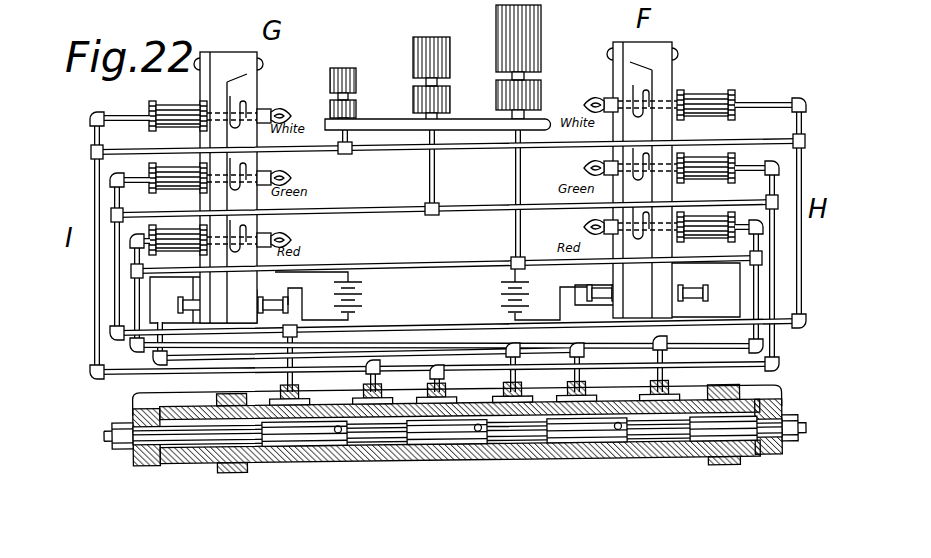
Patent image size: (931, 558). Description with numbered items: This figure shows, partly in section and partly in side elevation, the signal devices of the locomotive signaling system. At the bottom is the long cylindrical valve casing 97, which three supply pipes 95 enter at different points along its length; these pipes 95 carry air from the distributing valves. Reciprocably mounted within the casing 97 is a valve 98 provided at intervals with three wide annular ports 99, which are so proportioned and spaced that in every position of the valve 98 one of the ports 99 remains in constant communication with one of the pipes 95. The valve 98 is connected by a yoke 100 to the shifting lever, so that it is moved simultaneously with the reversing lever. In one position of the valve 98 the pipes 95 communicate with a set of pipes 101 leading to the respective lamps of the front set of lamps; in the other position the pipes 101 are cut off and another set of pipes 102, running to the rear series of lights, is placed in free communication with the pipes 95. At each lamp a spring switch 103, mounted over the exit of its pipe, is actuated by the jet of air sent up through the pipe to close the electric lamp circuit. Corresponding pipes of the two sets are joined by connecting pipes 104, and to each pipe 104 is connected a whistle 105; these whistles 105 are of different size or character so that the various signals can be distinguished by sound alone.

The pipes 95 is at (330, 441).
The valve casing 97 is at (375, 462).
The valve 98 is at (657, 441).
The annular ports 99 is at (290, 441).
The yoke 100 is at (142, 405).
The pipes 101 is at (437, 327).
The pipes 102 is at (130, 309).
The spring switch 103 is at (245, 112).
The pipes 104 is at (389, 150).
The whistle 105 is at (345, 70).